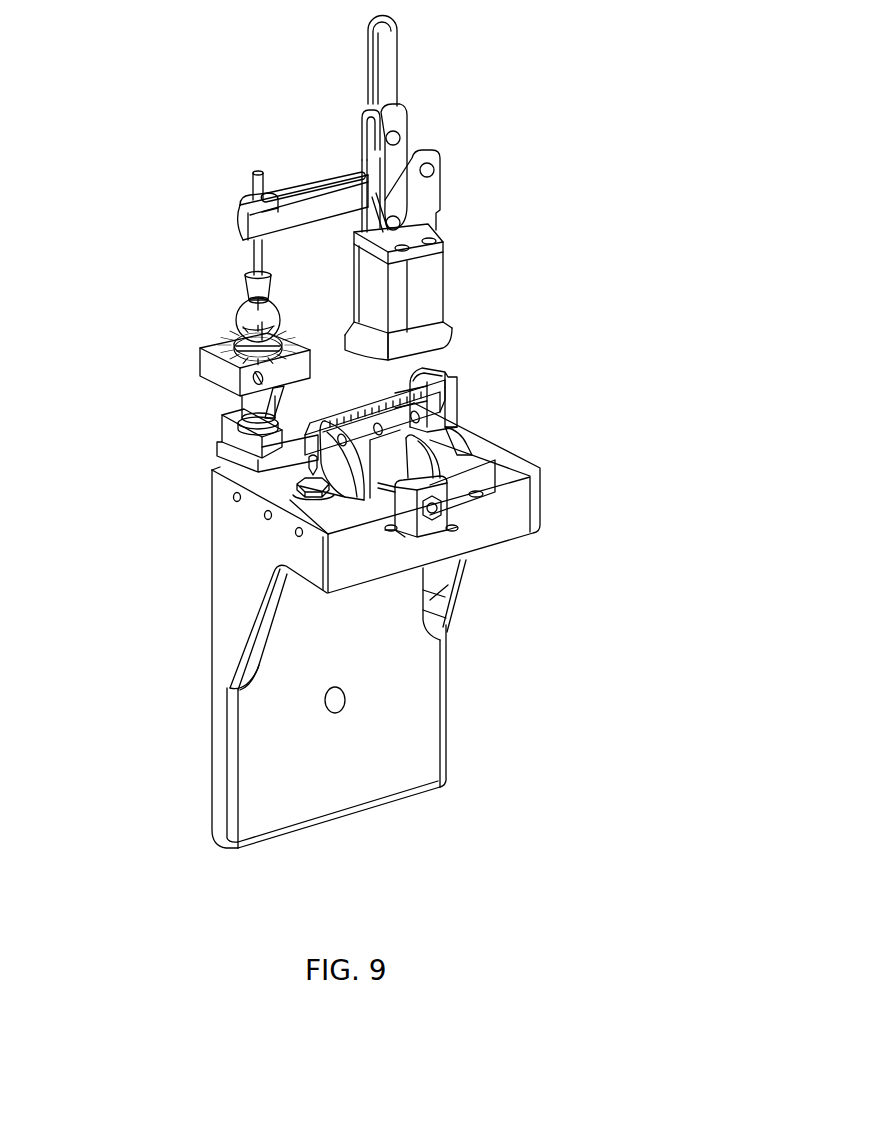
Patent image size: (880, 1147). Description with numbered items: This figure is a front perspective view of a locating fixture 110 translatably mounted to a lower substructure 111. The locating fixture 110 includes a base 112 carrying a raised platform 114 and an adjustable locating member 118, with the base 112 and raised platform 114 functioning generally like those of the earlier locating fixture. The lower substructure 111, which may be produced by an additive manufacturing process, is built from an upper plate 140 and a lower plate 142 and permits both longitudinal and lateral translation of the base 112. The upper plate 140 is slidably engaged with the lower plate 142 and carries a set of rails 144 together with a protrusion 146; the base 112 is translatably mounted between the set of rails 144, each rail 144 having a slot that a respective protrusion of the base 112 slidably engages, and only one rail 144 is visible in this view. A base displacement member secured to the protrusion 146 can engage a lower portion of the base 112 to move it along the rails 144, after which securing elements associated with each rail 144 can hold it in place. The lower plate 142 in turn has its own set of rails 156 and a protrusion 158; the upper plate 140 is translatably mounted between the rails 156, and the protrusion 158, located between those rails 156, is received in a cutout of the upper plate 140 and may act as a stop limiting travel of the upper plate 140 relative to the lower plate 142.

The locating fixture 110 is at (115, 298).
The lower substructure 111 is at (638, 467).
The base 112 is at (222, 432).
The raised platform 114 is at (204, 357).
The adjustable locating member 118 is at (242, 310).
The upper plate 140 is at (458, 407).
The lower plate 142 is at (548, 514).
The rail 144 is at (462, 432).
The protrusion 146 is at (412, 372).
The rails 156 is at (325, 545).
The protrusion 158 is at (417, 524).